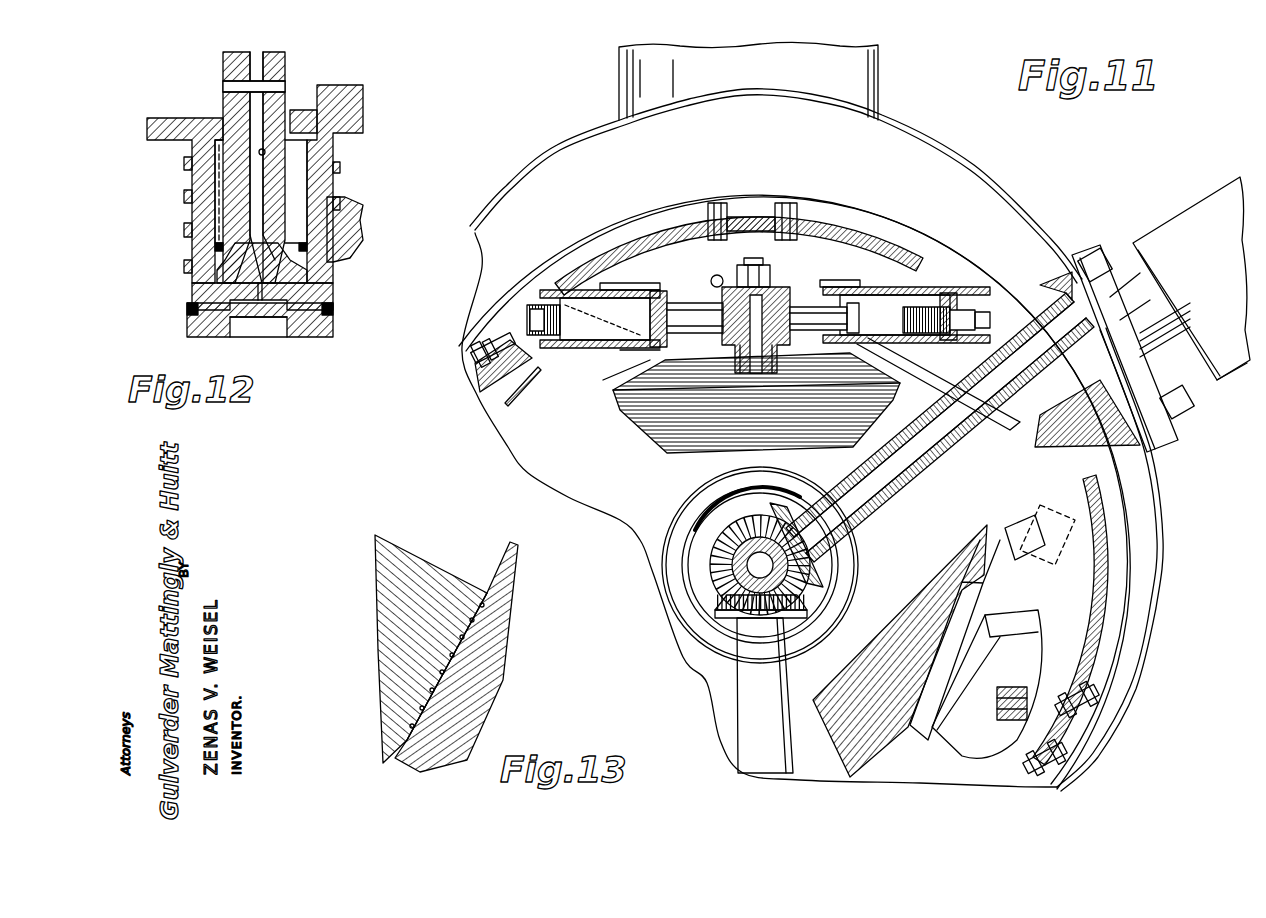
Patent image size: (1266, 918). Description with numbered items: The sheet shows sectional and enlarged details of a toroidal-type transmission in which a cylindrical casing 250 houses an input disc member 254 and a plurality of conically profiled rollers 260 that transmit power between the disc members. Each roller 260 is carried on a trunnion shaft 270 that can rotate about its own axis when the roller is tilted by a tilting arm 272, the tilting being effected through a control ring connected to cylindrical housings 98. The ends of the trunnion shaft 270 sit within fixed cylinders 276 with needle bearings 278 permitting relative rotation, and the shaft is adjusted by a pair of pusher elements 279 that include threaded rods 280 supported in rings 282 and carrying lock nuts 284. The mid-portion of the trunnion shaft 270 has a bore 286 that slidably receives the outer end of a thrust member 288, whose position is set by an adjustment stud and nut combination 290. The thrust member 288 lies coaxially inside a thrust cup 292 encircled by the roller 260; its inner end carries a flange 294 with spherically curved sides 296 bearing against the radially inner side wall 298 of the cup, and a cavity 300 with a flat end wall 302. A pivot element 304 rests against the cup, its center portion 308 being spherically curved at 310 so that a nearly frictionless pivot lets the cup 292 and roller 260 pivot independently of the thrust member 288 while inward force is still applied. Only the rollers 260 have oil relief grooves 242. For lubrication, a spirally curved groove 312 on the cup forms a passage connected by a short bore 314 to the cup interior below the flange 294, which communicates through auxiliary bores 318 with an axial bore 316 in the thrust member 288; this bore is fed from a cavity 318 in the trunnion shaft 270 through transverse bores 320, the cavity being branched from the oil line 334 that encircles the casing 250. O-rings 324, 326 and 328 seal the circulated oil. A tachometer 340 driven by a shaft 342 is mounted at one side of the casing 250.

In FIG. 11, the cylindrical housing 98 is at (1030, 520).
In FIG. 13, the oil relief grooves 242 is at (467, 635).
In FIG. 11, the cylindrical casing 250 is at (1110, 605).
In FIG. 13, the input disc member 254 is at (507, 676).
In FIG. 13, the power-transmitting conically profiled roller 260 is at (433, 567).
In FIG. 11, the power-transmitting conically profiled roller 260 is at (630, 412).
In FIG. 11, the trunnion shaft 270 is at (745, 275).
In FIG. 11, the tilting arm 272 is at (1000, 545).
In FIG. 11, the fixed cylinder 276 is at (618, 290).
In FIG. 11, the needle bearing 278 is at (680, 290).
In FIG. 11, the pusher element 279 is at (856, 302).
In FIG. 11, the threaded rod 280 is at (650, 320).
In FIG. 11, the ring 282 is at (965, 300).
In FIG. 11, the lock nut 284 is at (545, 318).
In FIG. 11, the bore 286 is at (718, 350).
In FIG. 12, the thrust member 288 is at (290, 60).
In FIG. 11, the thrust member 288 is at (762, 370).
In FIG. 11, the adjustment stud and nut combination 290 is at (770, 272).
In FIG. 12, the thrust cup 292 is at (333, 180).
In FIG. 11, the thrust cup 292 is at (796, 342).
In FIG. 12, the flange 294 is at (330, 290).
In FIG. 12, the spherically curved sides 296 is at (320, 270).
In FIG. 12, the radially inner side wall 298 is at (213, 175).
In FIG. 12, the cavity 300 is at (203, 293).
In FIG. 12, the end wall 302 is at (226, 268).
In FIG. 12, the pivot element 304 is at (222, 318).
In FIG. 12, the center portion 308 is at (263, 320).
In FIG. 12, the spherically curved surface 310 is at (358, 225).
In FIG. 12, the spirally curved groove 312 is at (191, 207).
In FIG. 12, the short bore 314 is at (190, 305).
In FIG. 12, the axial bore 316 is at (270, 152).
In FIG. 11, the axial bore 316 is at (740, 360).
In FIG. 12, the auxiliary bores / cavity 318 is at (218, 248).
In FIG. 11, the auxiliary bores / cavity 318 is at (812, 300).
In FIG. 12, the transverse bores 320 is at (287, 84).
In FIG. 11, the transverse bores 320 is at (727, 317).
In FIG. 11, the O-ring 324 is at (882, 325).
In FIG. 12, the O-ring 326 is at (303, 245).
In FIG. 12, the O-ring 328 is at (333, 308).
In FIG. 11, the oil line 334 is at (945, 382).
In FIG. 11, the tachometer 340 is at (1185, 238).
In FIG. 11, the shaft 342 is at (898, 510).